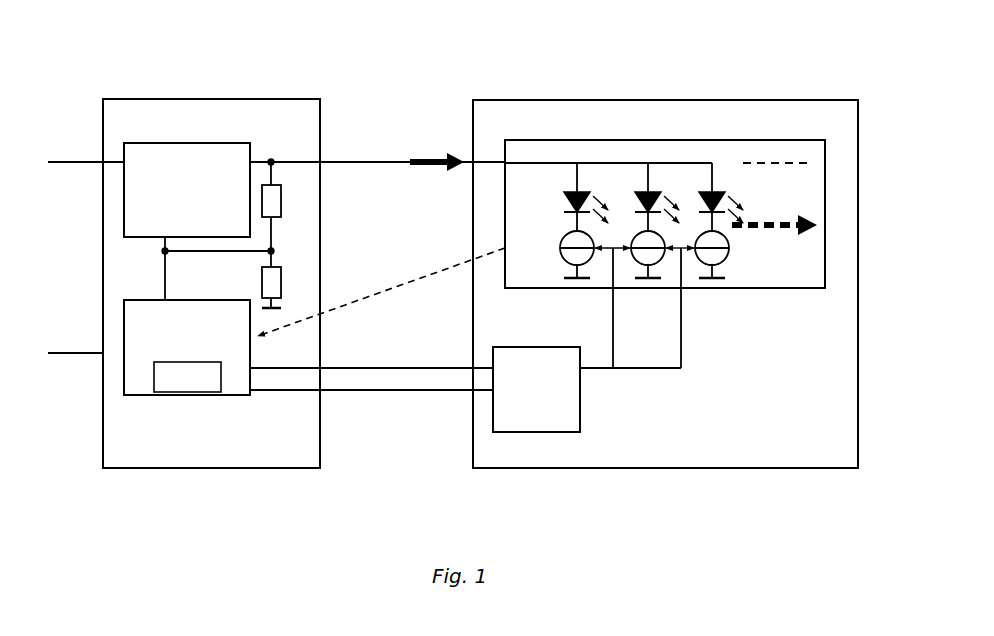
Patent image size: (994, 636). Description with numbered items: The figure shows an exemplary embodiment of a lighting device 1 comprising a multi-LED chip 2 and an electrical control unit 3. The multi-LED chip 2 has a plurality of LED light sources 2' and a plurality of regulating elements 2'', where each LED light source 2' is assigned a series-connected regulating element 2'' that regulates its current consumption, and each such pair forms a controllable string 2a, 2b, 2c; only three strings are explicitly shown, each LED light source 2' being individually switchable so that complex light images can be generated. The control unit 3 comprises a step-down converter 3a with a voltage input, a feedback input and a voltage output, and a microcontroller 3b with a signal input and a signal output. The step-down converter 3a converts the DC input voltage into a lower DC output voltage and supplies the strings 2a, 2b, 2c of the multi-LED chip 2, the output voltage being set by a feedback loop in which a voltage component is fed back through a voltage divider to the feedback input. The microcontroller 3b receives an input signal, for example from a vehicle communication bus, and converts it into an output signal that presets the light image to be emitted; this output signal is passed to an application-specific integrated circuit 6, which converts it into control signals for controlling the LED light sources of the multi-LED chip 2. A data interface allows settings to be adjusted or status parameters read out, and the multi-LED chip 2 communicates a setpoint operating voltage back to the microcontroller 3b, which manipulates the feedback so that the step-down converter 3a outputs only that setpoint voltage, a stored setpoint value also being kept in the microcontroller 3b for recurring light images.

The lighting device 1 is at (172, 64).
The multi-LED chip 2 is at (703, 252).
The controllable string 2a is at (577, 150).
The controllable string 2b is at (648, 150).
The controllable string 2c is at (712, 150).
The LED light source 2' is at (719, 176).
The regulating element 2'' is at (747, 264).
The electrical control unit 3 is at (261, 252).
The step-down converter 3a is at (187, 190).
The microcontroller 3b is at (187, 347).
The application-specific integrated circuit 6 is at (536, 389).